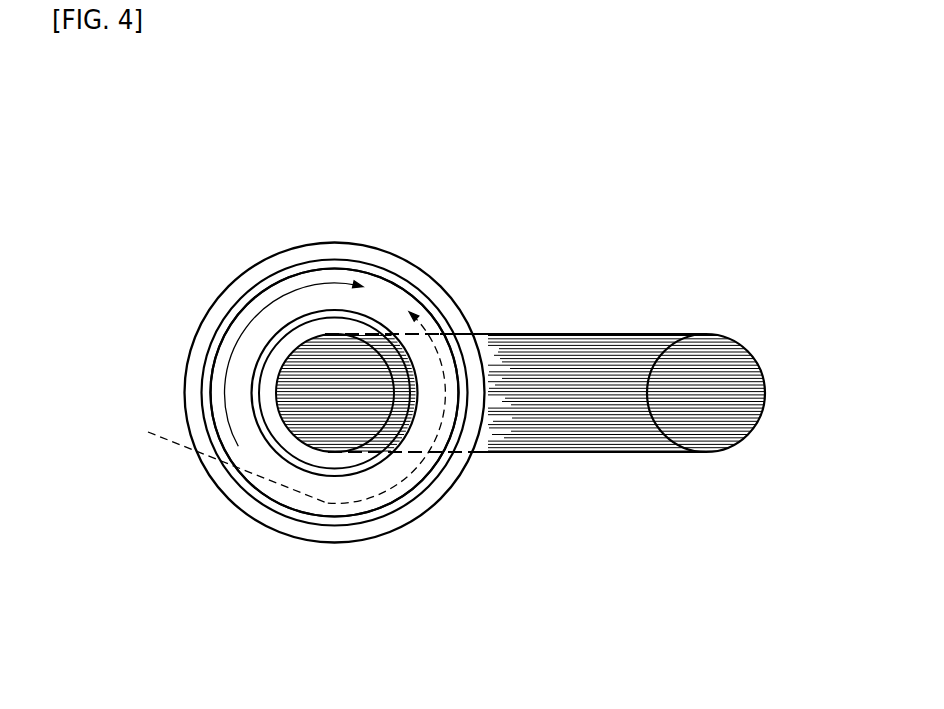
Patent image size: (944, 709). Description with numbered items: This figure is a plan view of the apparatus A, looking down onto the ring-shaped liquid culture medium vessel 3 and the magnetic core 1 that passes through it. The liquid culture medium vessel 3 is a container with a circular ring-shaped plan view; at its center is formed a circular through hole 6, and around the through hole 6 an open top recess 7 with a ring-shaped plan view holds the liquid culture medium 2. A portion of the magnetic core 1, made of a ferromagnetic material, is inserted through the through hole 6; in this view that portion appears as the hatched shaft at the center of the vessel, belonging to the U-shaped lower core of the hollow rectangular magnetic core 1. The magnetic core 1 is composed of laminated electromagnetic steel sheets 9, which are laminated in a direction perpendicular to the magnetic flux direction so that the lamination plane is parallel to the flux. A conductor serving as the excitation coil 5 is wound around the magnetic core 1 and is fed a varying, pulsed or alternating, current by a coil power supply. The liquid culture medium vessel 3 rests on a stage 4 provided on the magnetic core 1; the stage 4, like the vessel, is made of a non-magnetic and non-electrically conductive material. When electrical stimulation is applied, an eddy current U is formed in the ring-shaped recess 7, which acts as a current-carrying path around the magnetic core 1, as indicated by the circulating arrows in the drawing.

The magnetic core 1 is at (560, 369).
The liquid culture medium 2 is at (337, 275).
The liquid culture medium vessel 3 is at (202, 384).
The stage 4 is at (430, 275).
The excitation coil 5 is at (375, 268).
The through hole 6 is at (308, 327).
The recess 7 is at (223, 362).
The electromagnetic steel sheets 9 is at (563, 345).
The apparatus A is at (305, 358).
The eddy current U is at (228, 427).